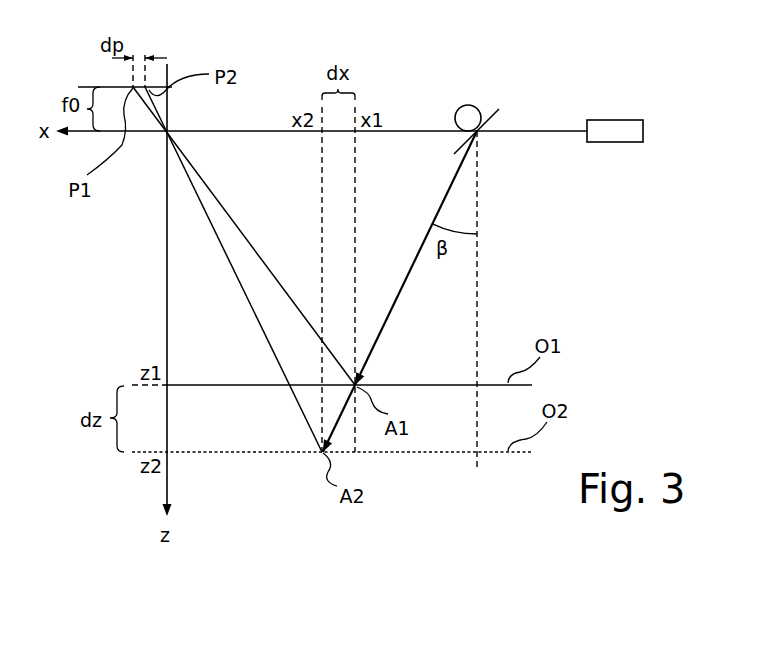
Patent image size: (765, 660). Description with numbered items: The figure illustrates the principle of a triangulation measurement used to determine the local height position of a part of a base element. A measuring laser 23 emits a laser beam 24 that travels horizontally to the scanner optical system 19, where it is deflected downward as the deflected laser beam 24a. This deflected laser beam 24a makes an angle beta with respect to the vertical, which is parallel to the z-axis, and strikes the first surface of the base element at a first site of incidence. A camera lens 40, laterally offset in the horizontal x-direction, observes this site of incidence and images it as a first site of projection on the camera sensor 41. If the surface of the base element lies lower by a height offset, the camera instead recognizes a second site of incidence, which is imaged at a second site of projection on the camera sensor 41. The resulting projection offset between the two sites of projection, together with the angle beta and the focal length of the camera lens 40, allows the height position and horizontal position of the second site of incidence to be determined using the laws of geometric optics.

The camera sensor 41 is at (86, 87).
The camera lens 40 is at (166, 133).
The scanner optical system 19 is at (491, 112).
The laser beam 24 is at (537, 130).
The deflected laser beam 24a is at (411, 265).
The measuring laser 23 is at (613, 134).